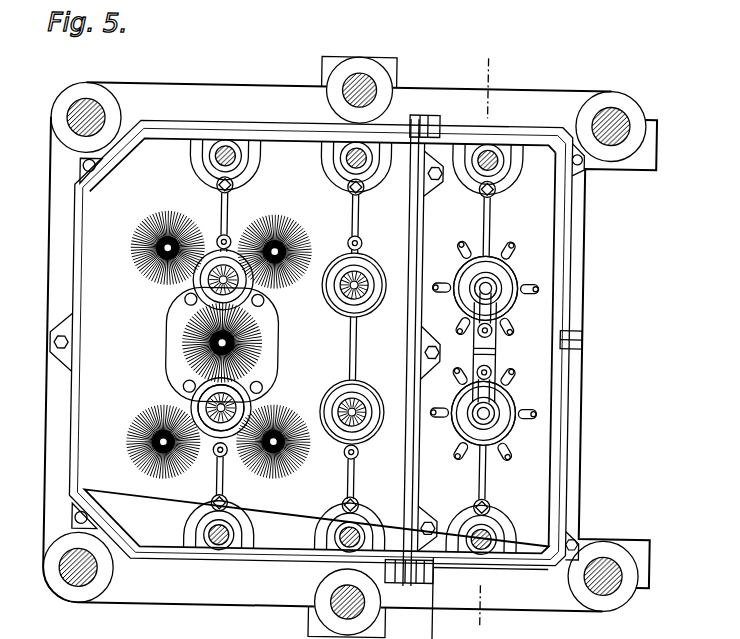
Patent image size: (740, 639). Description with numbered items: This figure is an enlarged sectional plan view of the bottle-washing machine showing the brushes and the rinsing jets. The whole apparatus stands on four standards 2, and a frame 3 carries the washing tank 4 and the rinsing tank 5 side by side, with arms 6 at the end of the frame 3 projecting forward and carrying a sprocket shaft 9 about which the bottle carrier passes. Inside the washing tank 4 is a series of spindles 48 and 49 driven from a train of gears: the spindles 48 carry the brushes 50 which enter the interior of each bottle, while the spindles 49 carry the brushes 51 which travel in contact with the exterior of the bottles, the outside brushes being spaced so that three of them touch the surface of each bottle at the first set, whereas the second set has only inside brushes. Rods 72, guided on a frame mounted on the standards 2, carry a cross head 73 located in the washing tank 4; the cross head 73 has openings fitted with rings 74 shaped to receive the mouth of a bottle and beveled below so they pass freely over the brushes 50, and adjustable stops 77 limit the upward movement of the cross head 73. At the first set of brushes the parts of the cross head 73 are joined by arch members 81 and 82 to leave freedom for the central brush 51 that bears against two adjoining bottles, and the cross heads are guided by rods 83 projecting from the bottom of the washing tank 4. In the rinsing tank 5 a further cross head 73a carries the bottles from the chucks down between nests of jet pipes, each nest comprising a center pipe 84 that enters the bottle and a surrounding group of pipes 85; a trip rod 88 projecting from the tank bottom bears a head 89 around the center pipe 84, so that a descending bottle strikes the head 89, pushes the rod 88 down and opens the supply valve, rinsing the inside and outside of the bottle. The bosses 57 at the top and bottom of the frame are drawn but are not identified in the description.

The standards 2 is at (76, 113).
The frame 3 is at (232, 600).
The washing tank 4 is at (101, 411).
The rinsing tank 5 is at (542, 472).
The arms 6 is at (483, 340).
The shaft 9 is at (215, 206).
The spindles 48 is at (229, 402).
The spindles 49 is at (163, 258).
The brushes 50 is at (235, 285).
The brushes 51 is at (158, 243).
The bearing boss 57 is at (372, 92).
The rods 72 is at (222, 159).
The cross head 73 is at (357, 210).
The cross head 73a is at (488, 216).
The rings 74 is at (346, 312).
The adjustable stops 77 is at (228, 190).
The arch member 81 is at (168, 358).
The arch member 82 is at (271, 313).
The rods 83 is at (224, 242).
The center jet pipe 84 is at (491, 283).
The jet pipes 85 is at (444, 290).
The trip rod 88 is at (480, 328).
The head 89 is at (504, 315).